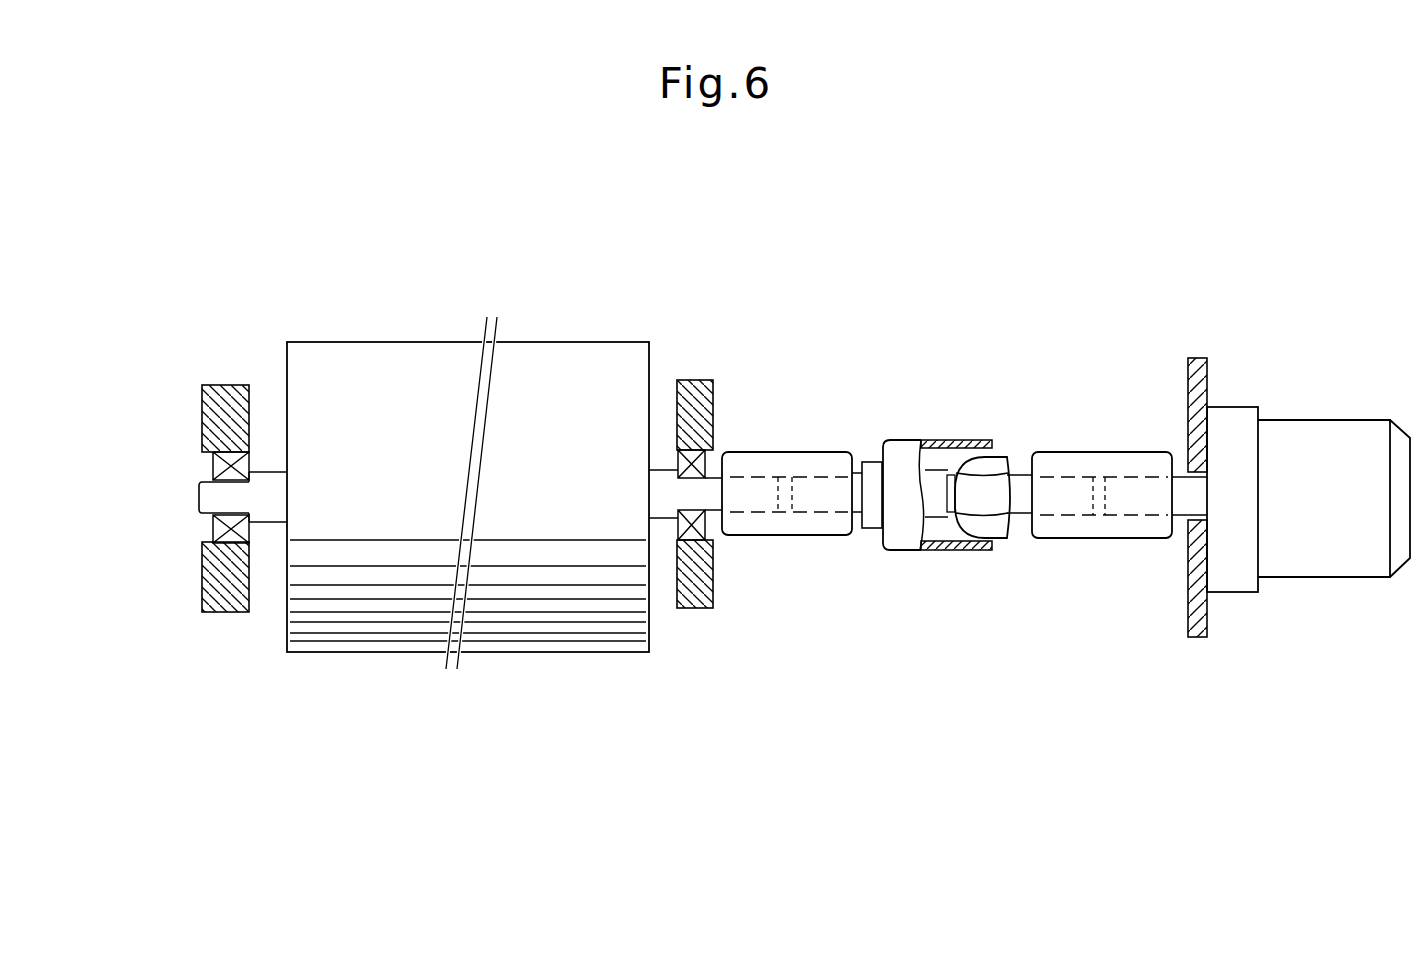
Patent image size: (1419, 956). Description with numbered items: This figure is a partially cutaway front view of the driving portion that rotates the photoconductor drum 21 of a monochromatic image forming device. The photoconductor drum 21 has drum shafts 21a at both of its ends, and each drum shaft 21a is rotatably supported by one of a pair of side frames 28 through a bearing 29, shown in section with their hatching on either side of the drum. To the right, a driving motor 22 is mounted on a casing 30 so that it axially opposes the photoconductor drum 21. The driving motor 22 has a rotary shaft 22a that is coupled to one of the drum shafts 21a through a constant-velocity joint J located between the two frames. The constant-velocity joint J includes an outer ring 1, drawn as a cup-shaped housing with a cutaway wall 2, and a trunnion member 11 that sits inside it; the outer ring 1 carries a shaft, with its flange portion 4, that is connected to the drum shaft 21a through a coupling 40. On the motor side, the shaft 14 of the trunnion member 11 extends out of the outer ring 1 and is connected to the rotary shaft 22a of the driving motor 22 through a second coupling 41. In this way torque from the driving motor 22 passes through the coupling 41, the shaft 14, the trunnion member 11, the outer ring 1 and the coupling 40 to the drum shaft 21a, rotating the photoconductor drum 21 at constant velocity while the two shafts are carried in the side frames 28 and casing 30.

The outer ring 1 is at (902, 437).
The cup member 2 is at (940, 458).
The constant-velocity joint J is at (1009, 431).
The flange 4 is at (823, 502).
The trunnion member 11 is at (1002, 540).
The shaft 14 is at (1018, 500).
The photoconductor drum 21 is at (399, 342).
The drum shaft 21a is at (210, 497).
The driving motor 22 is at (1330, 428).
The rotary shaft 22a is at (1182, 492).
The side frame 28 is at (213, 400).
The bearing 29 is at (217, 532).
The casing 30 is at (1200, 372).
The coupling 40 is at (795, 528).
The coupling 41 is at (1097, 460).